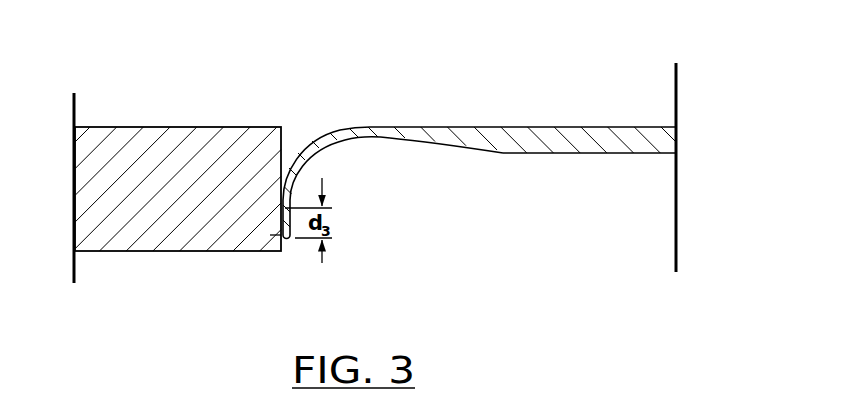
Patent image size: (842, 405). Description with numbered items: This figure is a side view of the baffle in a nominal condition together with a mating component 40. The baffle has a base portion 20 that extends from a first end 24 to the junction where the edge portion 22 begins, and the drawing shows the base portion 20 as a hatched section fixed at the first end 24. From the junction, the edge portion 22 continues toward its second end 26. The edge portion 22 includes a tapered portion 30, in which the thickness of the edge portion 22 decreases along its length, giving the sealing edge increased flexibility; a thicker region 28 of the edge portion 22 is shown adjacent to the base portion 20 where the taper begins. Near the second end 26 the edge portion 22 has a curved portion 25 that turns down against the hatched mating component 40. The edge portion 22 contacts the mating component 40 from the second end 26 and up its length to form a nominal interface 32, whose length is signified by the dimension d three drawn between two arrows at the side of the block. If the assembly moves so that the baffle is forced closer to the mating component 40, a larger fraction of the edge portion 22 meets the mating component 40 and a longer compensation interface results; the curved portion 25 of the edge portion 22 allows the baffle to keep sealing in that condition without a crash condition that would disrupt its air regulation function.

The base portion 20 is at (479, 169).
The edge portion 22 is at (309, 134).
The first end 24 is at (658, 142).
The curved portion 25 is at (340, 157).
The second end 26 is at (285, 242).
The thick root portion of beam 28 is at (552, 150).
The tapered portion 30 is at (458, 158).
The nominal interface 32 is at (280, 225).
The mating component 40 is at (141, 257).